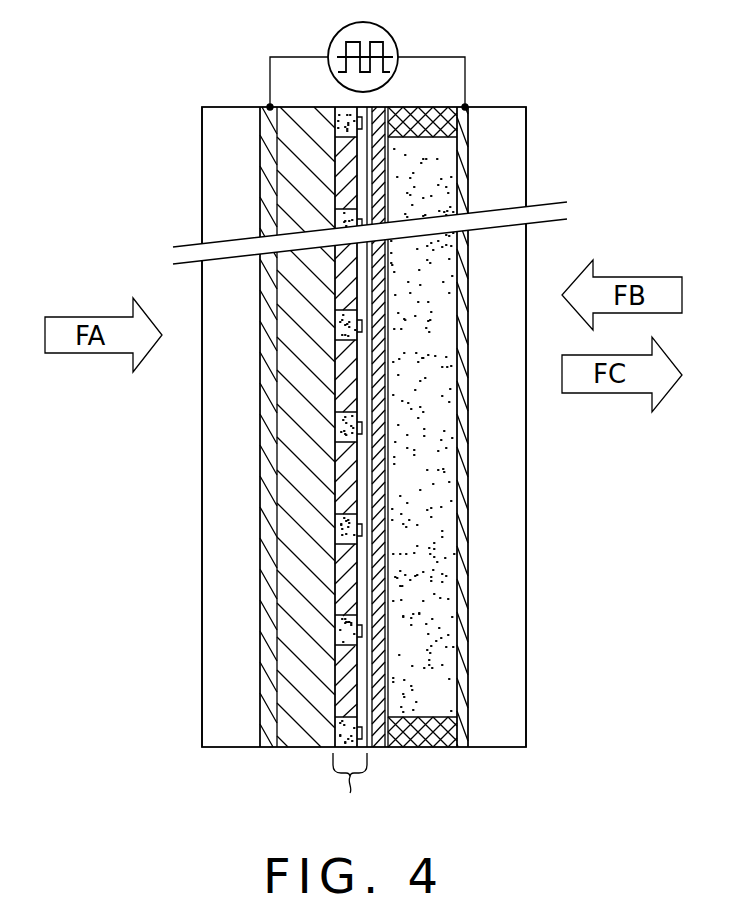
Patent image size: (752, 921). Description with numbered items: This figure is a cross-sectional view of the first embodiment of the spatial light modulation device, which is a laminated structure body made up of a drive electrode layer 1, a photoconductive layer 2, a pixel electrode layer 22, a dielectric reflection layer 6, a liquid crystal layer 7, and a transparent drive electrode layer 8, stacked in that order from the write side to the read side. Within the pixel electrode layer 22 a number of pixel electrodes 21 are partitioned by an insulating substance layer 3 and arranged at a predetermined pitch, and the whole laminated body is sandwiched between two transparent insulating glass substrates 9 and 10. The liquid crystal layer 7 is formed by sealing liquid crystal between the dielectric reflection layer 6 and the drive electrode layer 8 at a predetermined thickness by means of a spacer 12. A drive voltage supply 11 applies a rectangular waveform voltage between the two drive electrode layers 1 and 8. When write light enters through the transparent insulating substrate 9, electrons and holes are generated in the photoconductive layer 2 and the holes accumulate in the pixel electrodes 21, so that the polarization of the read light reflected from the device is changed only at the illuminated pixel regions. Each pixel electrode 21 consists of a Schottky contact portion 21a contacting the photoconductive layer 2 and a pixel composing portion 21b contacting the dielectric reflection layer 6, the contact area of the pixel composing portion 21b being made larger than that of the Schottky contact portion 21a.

The drive electrode layer 1 is at (262, 393).
The photoconductive layer 2 is at (298, 450).
The insulating substance layer 3 is at (345, 525).
The dielectric reflection layer 6 is at (385, 410).
The liquid crystal layer 7 is at (415, 502).
The transparent drive electrode layer 8 is at (463, 543).
The transparent insulating substrate 9 is at (233, 678).
The transparent insulating substrate 10 is at (492, 632).
The drive voltage supply 11 is at (398, 40).
The spacer 12 is at (423, 133).
The pixel electrode 21 is at (227, 427).
The Schottky contact portion 21a is at (347, 582).
The pixel composing portion 21b is at (353, 612).
The pixel electrode layer 22 is at (349, 789).